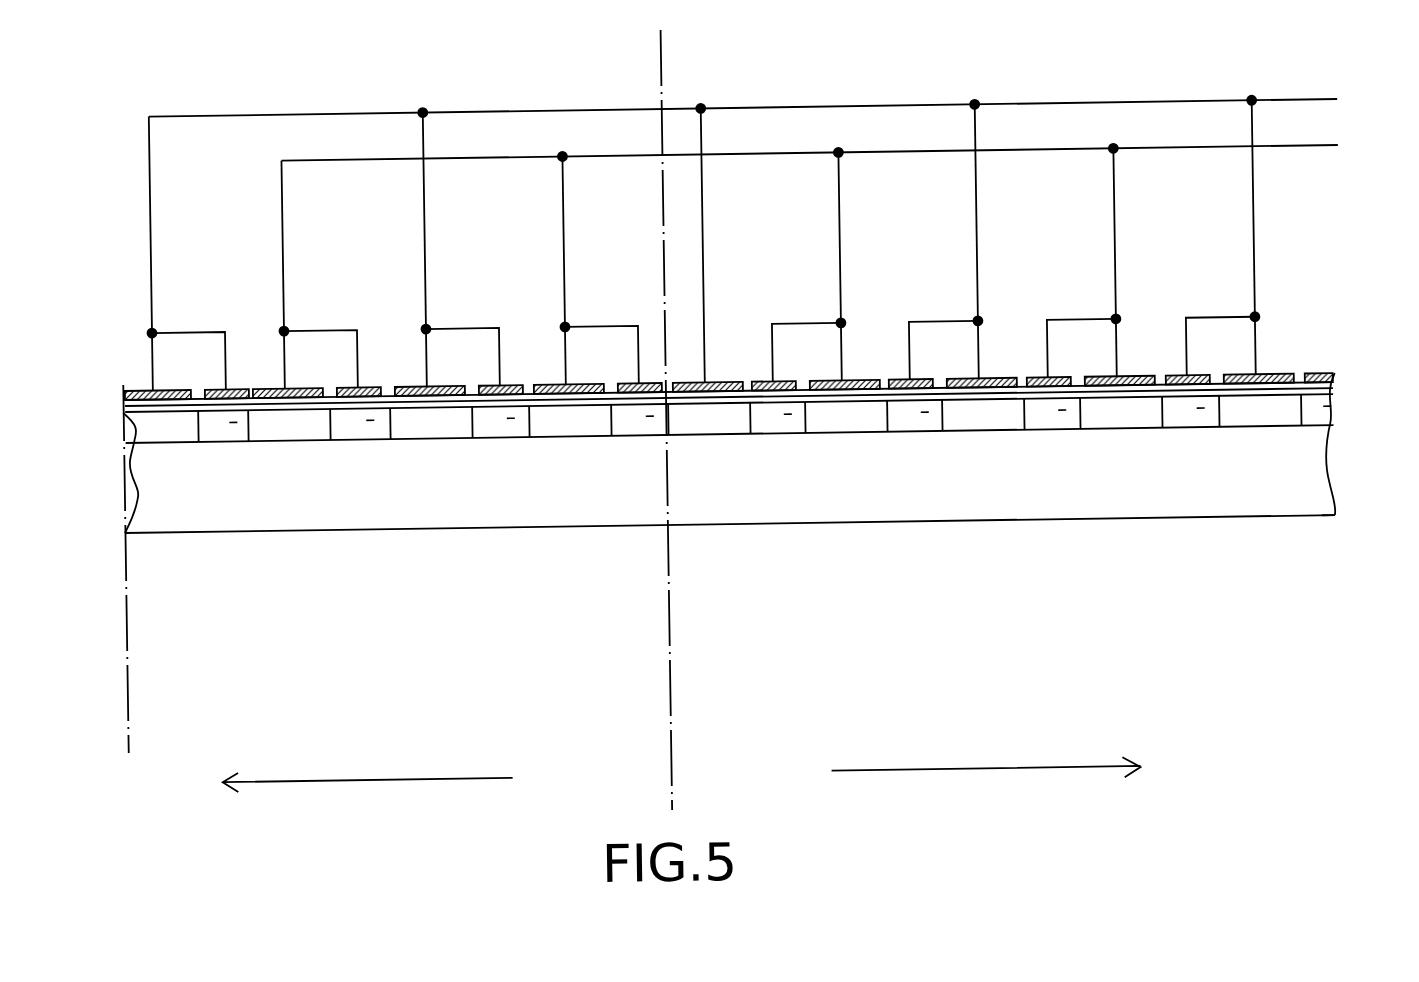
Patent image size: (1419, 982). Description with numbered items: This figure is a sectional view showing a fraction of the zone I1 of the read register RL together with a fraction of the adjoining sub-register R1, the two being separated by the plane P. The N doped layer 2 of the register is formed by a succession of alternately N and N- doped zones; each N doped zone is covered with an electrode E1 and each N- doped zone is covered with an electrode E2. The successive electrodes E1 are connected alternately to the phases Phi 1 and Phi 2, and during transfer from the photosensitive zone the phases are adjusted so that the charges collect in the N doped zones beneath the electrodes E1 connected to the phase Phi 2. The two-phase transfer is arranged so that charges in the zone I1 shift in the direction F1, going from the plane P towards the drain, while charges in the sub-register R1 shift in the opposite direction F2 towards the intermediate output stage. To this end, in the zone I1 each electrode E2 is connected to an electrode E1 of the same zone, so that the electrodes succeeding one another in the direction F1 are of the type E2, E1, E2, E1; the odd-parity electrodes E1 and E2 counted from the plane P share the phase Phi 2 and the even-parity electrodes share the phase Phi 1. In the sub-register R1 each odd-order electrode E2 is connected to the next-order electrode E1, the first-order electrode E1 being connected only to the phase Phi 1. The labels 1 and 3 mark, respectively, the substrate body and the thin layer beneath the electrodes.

The substrate 1 is at (730, 471).
The N doped layer 2 is at (715, 440).
The insulating layer 3 is at (719, 364).
The electrode E1 is at (274, 344).
The electrode E2 is at (363, 343).
The phase Phi 1 is at (778, 236).
The phase Phi 2 is at (845, 257).
The plane P is at (695, 419).
The read register RL is at (1354, 558).
The zone I1 is at (275, 567).
The sub-register R1 is at (1004, 640).
The direction F1 is at (367, 770).
The direction F2 is at (986, 760).